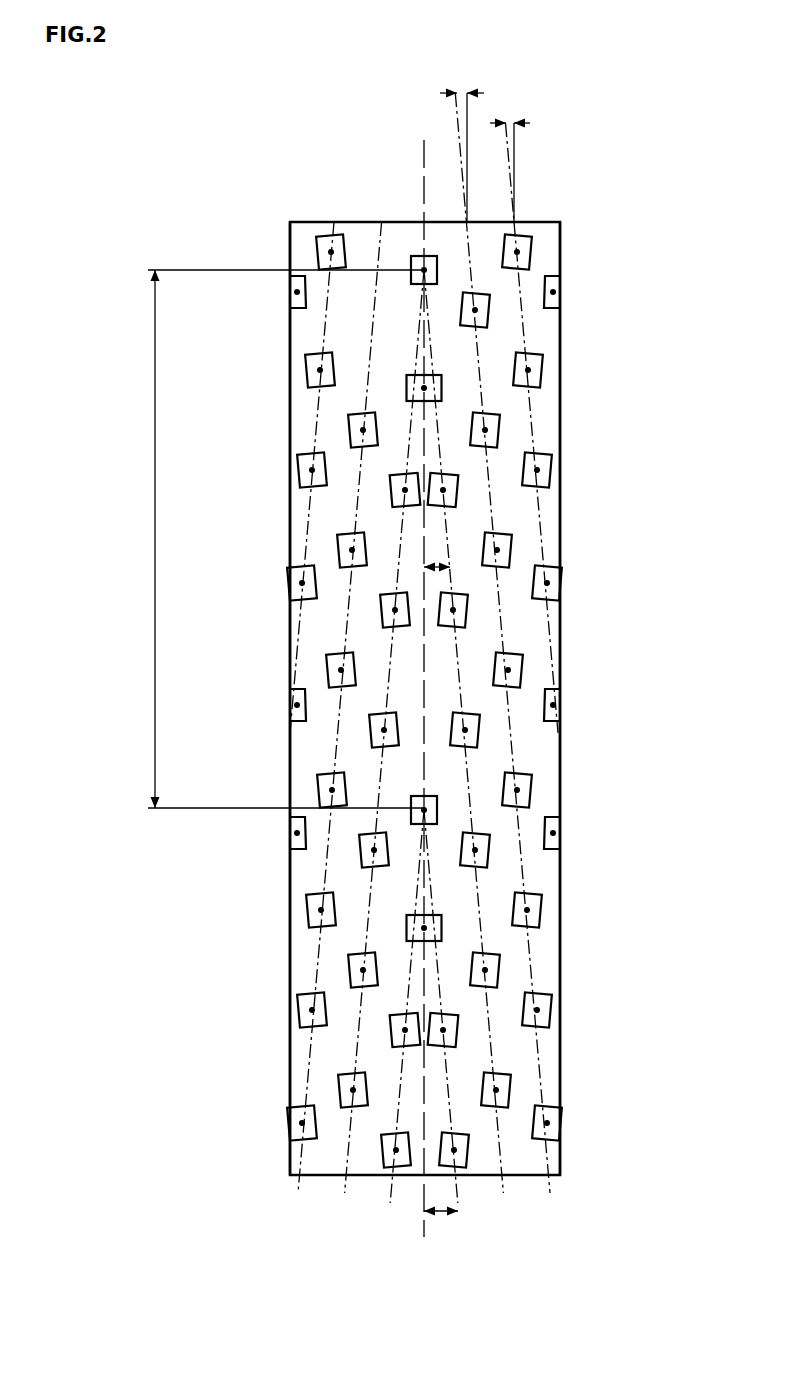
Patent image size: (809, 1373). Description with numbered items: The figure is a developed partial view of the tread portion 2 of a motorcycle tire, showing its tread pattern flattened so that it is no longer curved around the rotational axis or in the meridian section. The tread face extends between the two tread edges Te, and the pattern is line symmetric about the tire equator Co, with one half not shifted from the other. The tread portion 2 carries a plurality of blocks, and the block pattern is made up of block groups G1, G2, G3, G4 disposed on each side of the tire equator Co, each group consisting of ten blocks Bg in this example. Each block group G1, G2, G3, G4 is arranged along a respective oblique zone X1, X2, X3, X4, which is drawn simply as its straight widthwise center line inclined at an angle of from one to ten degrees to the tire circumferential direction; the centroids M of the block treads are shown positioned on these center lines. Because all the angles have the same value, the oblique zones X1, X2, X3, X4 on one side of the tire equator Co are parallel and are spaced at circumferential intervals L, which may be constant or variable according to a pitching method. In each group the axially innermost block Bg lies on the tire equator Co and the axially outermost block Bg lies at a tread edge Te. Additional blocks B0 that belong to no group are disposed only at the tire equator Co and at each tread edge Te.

The tread portion 2 is at (576, 190).
The tread edge Te is at (290, 884).
The tire equator Co is at (424, 680).
The centroid M is at (422, 262).
The block Bg is at (412, 262).
The block not belonging to any block group B0 is at (407, 388).
The interval L is at (283, 539).
The block group G1 is at (448, 1012).
The block group G2 is at (450, 474).
The block group G3 is at (492, 302).
The block group G4 is at (535, 247).
The oblique zone X1 is at (447, 1067).
The oblique zone X2 is at (448, 533).
The oblique zone X3 is at (490, 462).
The oblique zone X4 is at (532, 397).